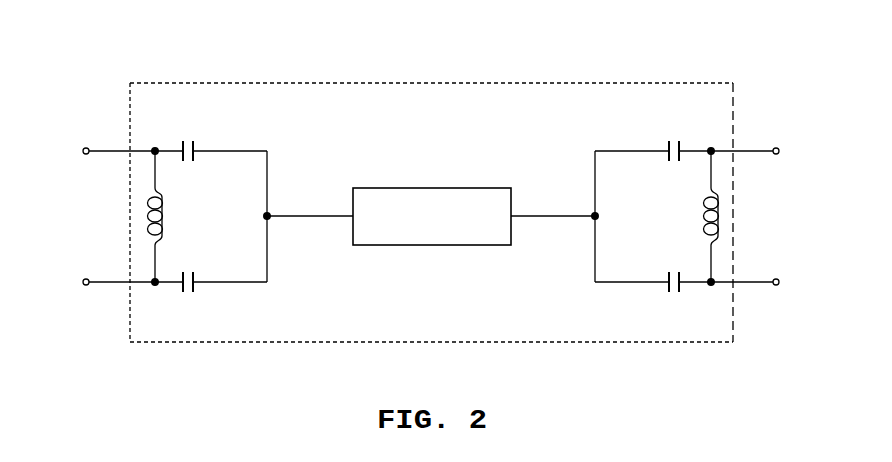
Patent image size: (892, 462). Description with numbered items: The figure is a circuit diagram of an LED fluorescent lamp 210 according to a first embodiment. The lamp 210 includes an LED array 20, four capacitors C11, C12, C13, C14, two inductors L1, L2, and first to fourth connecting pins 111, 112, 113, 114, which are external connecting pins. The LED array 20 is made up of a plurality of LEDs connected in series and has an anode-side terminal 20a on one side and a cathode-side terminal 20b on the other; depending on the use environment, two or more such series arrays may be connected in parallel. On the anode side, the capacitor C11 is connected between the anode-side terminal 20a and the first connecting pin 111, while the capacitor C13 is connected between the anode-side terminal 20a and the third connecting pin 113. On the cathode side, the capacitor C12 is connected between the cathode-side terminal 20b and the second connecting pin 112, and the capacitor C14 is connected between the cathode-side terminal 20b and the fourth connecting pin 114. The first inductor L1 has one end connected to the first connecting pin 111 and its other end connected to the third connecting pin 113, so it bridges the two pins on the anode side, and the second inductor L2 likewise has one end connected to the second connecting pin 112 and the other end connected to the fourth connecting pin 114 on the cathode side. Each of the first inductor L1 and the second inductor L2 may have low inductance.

The LED fluorescent lamp 210 is at (548, 83).
The LED array 20 is at (432, 188).
The anode-side terminal 20a is at (310, 202).
The cathode-side terminal 20b is at (553, 202).
The first connecting pin 111 is at (133, 143).
The second connecting pin 112 is at (729, 143).
The third connecting pin 113 is at (133, 273).
The fourth connecting pin 114 is at (729, 273).
The capacitor C11 is at (177, 143).
The capacitor C12 is at (680, 143).
The capacitor C13 is at (177, 274).
The capacitor C14 is at (680, 274).
The first inductor L1 is at (166, 216).
The second inductor L2 is at (698, 216).